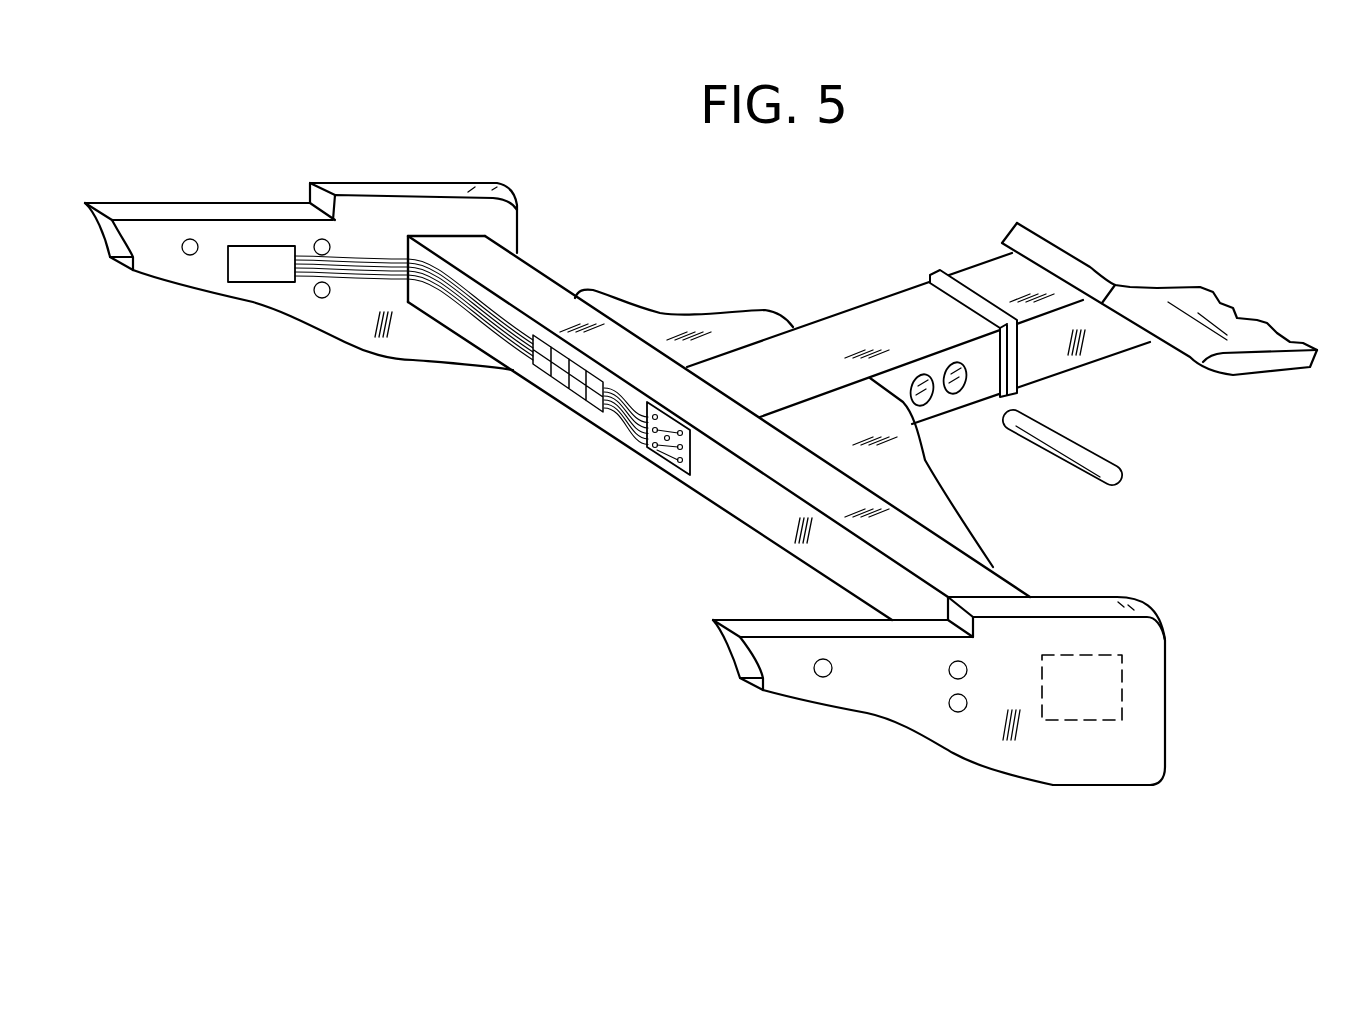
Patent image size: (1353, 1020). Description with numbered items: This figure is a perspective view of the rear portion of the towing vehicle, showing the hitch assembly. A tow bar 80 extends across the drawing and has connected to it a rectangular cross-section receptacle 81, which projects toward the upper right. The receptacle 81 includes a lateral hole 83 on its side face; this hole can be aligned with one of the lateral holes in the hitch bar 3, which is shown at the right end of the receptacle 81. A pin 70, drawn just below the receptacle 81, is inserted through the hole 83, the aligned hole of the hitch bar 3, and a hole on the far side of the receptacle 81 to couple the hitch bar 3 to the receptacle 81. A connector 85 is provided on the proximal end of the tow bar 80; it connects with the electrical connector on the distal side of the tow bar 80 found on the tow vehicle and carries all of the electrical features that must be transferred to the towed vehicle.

The hitch bar 3 is at (1237, 380).
The pin 70 is at (1092, 463).
The tow bar 80 is at (769, 538).
The rectangular cross-section receptacle 81 is at (865, 322).
The lateral hole 83 is at (957, 393).
The connector 85 is at (672, 463).